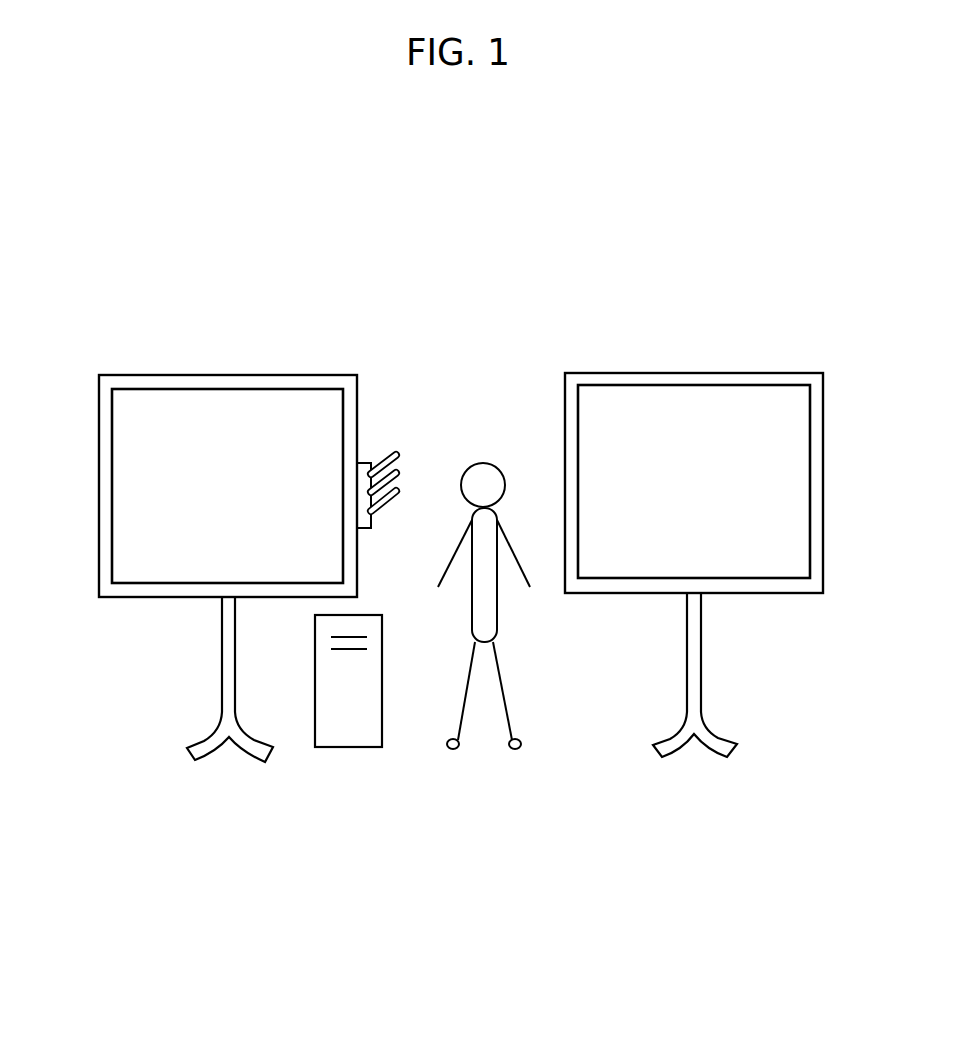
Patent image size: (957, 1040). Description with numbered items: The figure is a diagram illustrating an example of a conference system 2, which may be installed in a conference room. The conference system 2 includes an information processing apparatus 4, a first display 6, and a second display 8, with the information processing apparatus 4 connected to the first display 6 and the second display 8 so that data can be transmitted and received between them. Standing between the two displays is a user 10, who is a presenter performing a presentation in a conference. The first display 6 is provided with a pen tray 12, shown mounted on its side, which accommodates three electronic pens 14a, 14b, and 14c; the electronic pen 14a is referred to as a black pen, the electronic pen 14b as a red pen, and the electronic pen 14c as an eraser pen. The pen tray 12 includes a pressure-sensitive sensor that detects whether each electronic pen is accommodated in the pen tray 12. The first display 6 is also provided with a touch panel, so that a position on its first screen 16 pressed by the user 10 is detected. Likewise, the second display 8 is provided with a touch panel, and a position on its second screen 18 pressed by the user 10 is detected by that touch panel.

The conference system 2 is at (483, 299).
The information processing apparatus 4 is at (343, 748).
The first display 6 is at (212, 375).
The second display 8 is at (687, 373).
The user 10 is at (500, 470).
The pen tray 12 is at (365, 528).
The electronic pen 14a is at (387, 450).
The electronic pen 14b is at (398, 467).
The electronic pen 14c is at (388, 503).
The first screen 16 is at (125, 477).
The second screen 18 is at (797, 470).